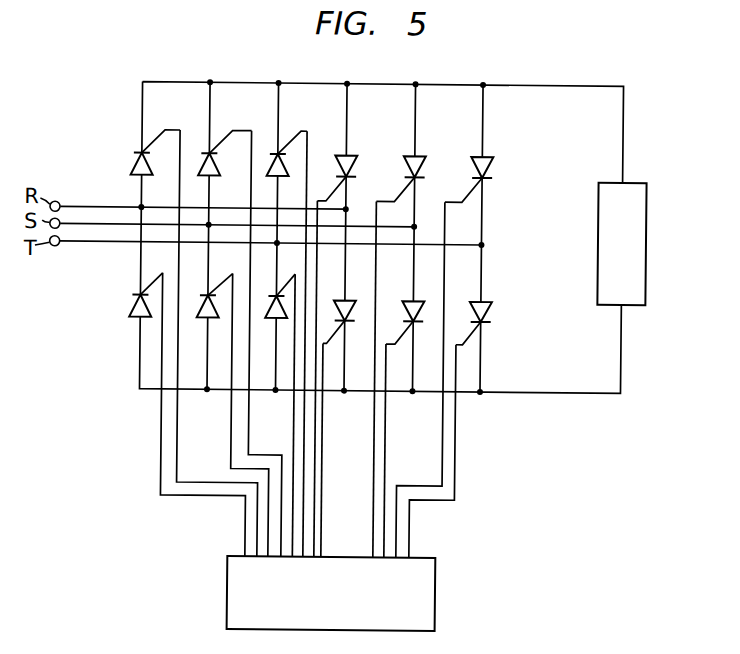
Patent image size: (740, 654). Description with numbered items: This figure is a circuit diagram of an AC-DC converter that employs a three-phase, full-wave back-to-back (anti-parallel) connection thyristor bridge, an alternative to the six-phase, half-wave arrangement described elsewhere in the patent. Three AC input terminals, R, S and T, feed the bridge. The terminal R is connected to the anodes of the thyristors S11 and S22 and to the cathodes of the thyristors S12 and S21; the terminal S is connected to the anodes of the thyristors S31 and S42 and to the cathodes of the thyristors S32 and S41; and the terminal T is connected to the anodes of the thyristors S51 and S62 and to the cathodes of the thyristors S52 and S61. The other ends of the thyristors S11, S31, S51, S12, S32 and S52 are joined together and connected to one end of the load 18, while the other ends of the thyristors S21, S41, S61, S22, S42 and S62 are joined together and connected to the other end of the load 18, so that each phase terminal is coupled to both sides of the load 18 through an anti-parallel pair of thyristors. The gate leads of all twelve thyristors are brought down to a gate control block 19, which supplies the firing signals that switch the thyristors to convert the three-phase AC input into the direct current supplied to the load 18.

The thyristor S11 is at (151, 172).
The thyristor S31 is at (218, 172).
The thyristor S51 is at (287, 172).
The thyristor S12 is at (356, 163).
The thyristor S32 is at (425, 163).
The thyristor S52 is at (492, 163).
The thyristor S21 is at (131, 320).
The thyristor S41 is at (198, 320).
The thyristor S61 is at (267, 320).
The thyristor S22 is at (355, 311).
The thyristor S42 is at (424, 311).
The thyristor S62 is at (491, 312).
The load 18 is at (647, 190).
The gate control 19 is at (440, 572).